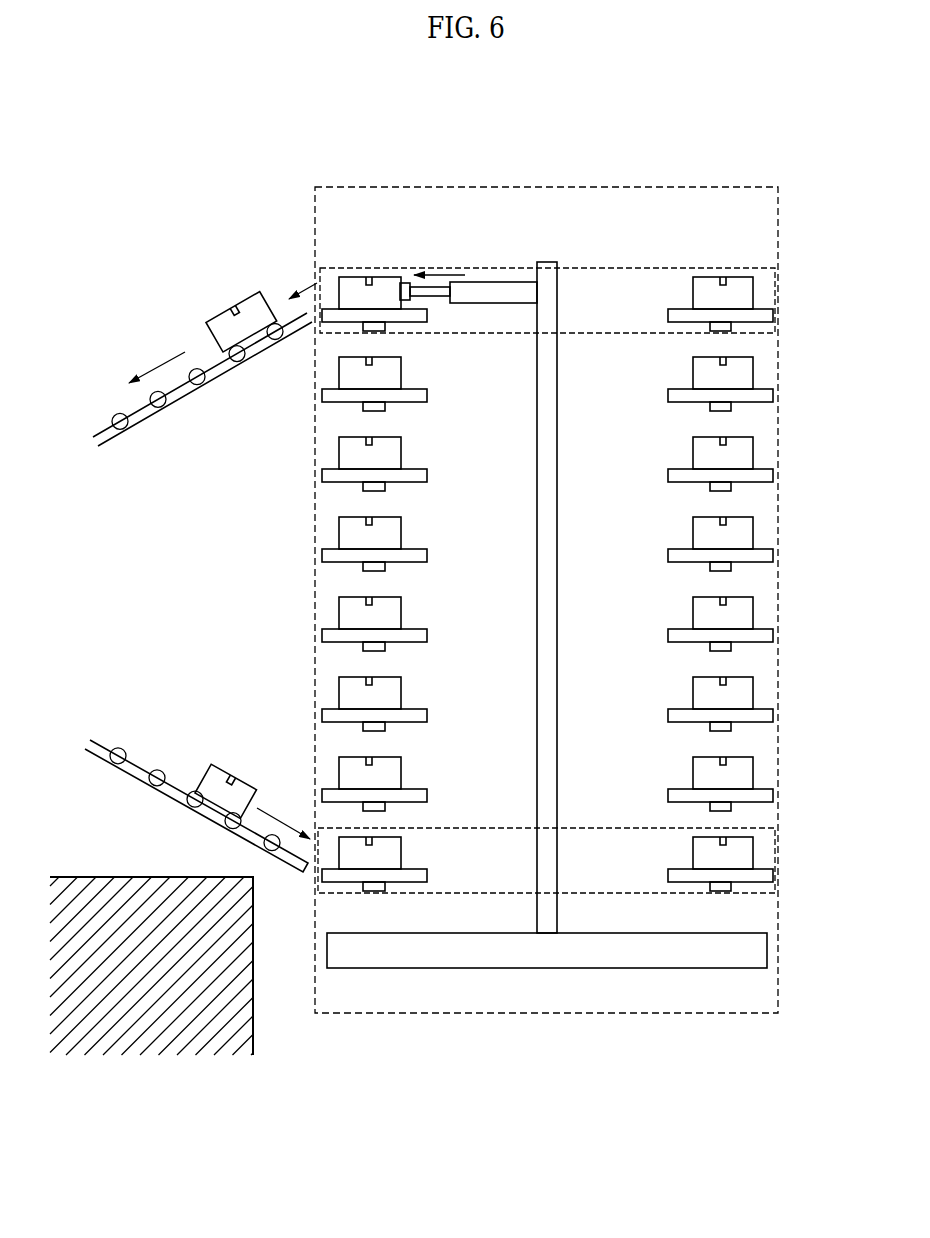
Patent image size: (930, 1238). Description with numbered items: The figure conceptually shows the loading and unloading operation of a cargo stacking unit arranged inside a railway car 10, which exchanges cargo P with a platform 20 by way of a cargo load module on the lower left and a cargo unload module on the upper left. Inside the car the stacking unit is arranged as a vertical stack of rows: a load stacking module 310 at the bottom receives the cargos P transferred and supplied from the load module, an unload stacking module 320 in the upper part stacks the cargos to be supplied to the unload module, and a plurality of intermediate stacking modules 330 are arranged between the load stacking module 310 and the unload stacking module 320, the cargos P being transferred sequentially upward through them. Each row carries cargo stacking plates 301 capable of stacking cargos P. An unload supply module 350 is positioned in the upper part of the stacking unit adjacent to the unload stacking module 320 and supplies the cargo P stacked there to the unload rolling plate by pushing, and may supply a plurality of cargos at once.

The railway car 10 is at (665, 187).
The platform 20 is at (88, 887).
The cargo P is at (740, 277).
The cargo stacking plate 301 is at (427, 873).
The load stacking module 310 is at (588, 860).
The unload stacking module 320 is at (777, 298).
The intermediate stacking module 330 is at (792, 808).
The unload supply module 350 is at (493, 282).